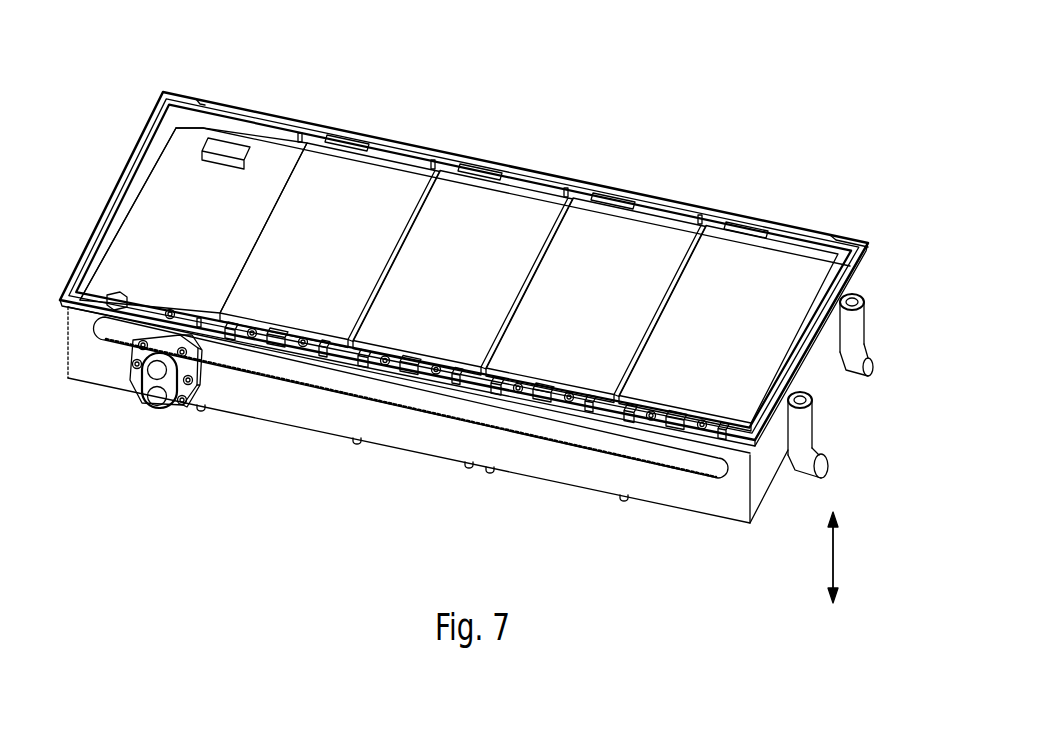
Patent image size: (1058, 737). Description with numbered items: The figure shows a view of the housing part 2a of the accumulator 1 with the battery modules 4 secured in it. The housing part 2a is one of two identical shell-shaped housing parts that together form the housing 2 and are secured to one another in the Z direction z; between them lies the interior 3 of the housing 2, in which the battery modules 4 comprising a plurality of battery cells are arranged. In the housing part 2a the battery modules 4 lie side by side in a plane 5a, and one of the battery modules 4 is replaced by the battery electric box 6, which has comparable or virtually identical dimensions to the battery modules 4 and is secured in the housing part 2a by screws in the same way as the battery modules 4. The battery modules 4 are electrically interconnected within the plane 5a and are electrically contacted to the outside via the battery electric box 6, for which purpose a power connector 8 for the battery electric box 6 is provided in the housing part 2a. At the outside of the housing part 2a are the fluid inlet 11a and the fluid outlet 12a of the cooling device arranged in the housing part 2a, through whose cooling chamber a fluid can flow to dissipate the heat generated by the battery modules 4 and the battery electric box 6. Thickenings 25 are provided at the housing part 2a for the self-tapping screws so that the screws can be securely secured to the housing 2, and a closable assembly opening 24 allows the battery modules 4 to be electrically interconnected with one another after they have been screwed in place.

The accumulator 1 is at (507, 291).
The housing 2 is at (511, 415).
The housing part 2a is at (832, 405).
The interior 3 is at (803, 326).
The battery module 4 is at (338, 245).
The battery electric box 6 is at (204, 218).
The power connector 8 is at (153, 396).
The plane 5a is at (833, 317).
The fluid inlet 11a is at (873, 367).
The fluid outlet 12a is at (828, 467).
The closable assembly opening 24 is at (334, 373).
The thickening 25 is at (201, 411).
The Z direction z is at (836, 560).